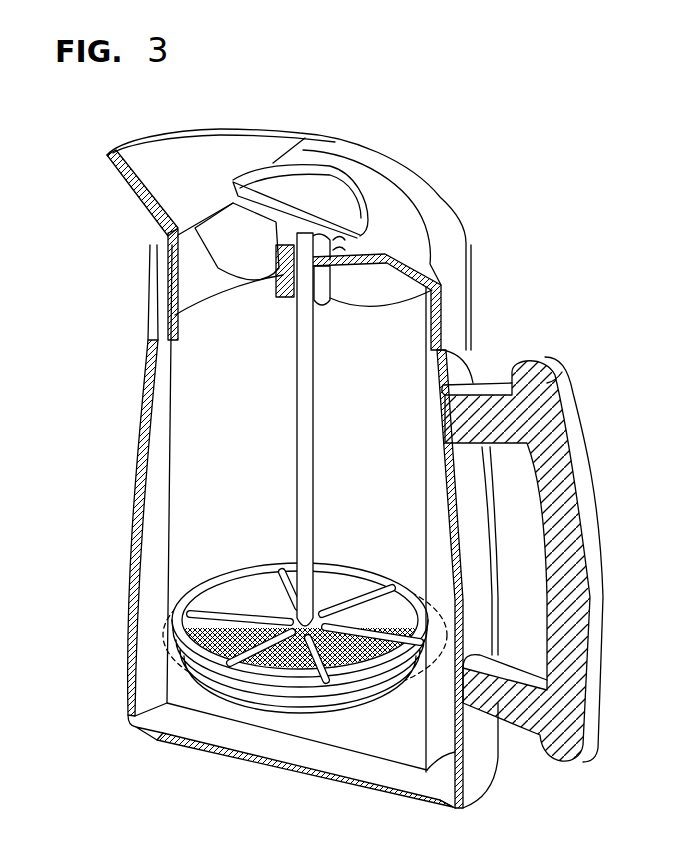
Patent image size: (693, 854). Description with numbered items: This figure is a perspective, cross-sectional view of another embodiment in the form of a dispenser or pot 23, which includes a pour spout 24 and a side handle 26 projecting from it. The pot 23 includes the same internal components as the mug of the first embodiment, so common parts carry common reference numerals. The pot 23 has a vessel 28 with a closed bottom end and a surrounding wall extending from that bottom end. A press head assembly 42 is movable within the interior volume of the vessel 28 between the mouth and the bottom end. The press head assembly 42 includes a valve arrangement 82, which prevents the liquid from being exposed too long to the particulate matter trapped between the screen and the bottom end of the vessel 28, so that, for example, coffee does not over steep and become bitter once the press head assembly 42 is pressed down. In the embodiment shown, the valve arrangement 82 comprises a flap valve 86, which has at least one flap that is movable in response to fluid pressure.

The pot 23 is at (493, 118).
The pour spout 24 is at (191, 132).
The side handle 26 is at (577, 465).
The vessel 28 is at (161, 432).
The press head assembly 42 is at (220, 545).
The valve arrangement 82 is at (363, 540).
The flap valve 86 is at (250, 585).